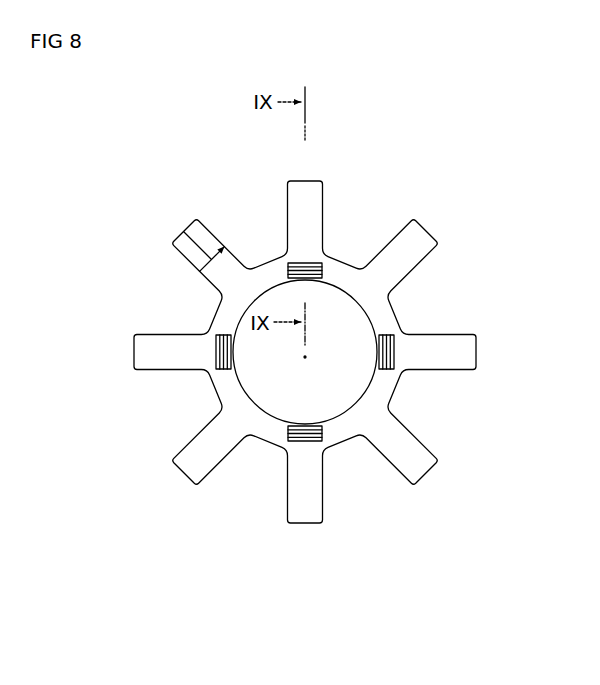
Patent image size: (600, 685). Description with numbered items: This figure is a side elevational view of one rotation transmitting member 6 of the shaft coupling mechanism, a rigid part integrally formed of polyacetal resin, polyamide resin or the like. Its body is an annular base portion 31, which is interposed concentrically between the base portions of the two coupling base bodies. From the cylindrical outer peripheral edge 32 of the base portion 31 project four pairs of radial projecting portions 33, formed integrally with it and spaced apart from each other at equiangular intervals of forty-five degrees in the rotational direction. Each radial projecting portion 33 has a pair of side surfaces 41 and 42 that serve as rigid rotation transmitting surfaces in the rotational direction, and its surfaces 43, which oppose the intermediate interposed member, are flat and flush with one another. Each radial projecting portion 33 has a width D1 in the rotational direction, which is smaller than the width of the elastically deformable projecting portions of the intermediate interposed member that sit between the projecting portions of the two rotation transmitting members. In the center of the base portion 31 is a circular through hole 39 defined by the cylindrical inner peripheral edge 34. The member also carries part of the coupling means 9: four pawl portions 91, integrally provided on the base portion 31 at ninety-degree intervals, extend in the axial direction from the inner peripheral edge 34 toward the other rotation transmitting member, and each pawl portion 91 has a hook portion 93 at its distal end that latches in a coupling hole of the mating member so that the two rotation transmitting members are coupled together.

The rotation transmitting member 6 is at (281, 349).
The radial projecting portions 33 is at (305, 190).
The annular base portion 31 is at (276, 270).
The cylindrical outer peripheral edge 32 is at (342, 264).
The cylindrical inner peripheral edge 34 is at (371, 315).
The side surface 41 is at (203, 272).
The side surface 42 is at (219, 238).
The surface 43 is at (222, 428).
The coupling means 9 is at (329, 352).
The pawl portions 91 is at (305, 352).
The hook portion 93 is at (309, 276).
The circular through hole 39 is at (339, 404).
The width of radial projecting portion D1 is at (180, 236).